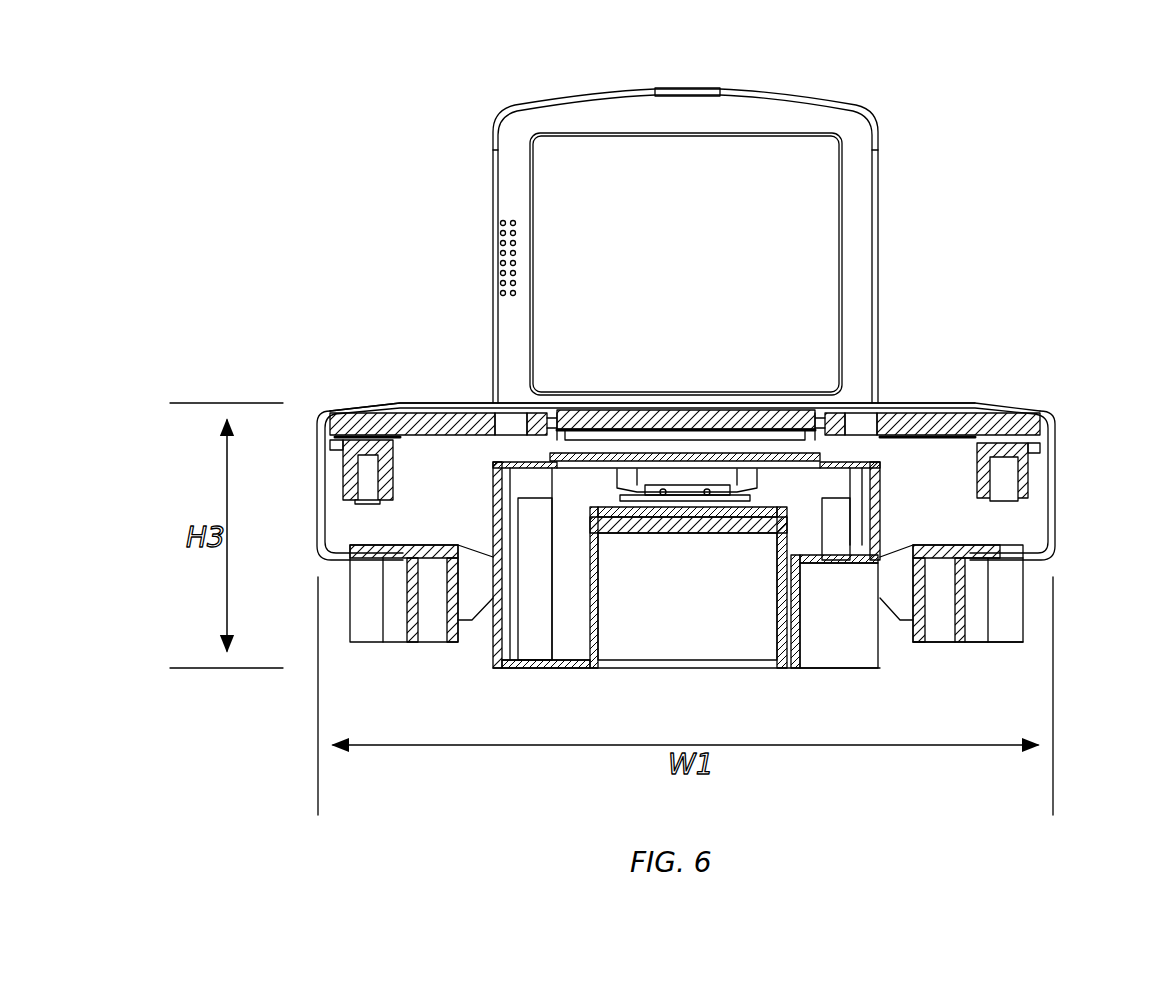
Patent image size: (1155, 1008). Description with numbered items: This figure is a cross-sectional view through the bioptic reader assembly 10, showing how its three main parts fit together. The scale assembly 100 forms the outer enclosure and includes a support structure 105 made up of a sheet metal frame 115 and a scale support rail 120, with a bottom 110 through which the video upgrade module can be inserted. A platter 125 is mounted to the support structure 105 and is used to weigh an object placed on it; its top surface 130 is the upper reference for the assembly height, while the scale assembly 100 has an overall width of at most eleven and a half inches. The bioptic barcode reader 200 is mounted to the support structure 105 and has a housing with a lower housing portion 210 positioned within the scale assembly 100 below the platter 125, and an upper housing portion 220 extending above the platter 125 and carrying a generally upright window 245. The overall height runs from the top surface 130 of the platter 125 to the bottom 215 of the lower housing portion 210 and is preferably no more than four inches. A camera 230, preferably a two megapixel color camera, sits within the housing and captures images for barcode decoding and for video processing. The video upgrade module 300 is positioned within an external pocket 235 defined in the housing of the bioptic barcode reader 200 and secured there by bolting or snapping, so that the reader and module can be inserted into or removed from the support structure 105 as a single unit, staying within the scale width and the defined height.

The bioptic reader assembly 10 is at (420, 90).
The scale assembly 100 is at (406, 450).
The support structure 105 is at (928, 647).
The bottom 110 is at (986, 645).
The sheet metal frame 115 is at (428, 547).
The scale support rail 120 is at (345, 492).
The platter 125 is at (922, 406).
The top surface 130 is at (428, 400).
The bioptic barcode reader 200 is at (884, 497).
The lower housing portion 210 is at (882, 528).
The bottom 215 is at (545, 669).
The upper housing portion 220 is at (878, 265).
The camera 230 is at (683, 498).
The external pocket 235 is at (806, 552).
The upright window 245 is at (710, 284).
The video upgrade module 300 is at (866, 627).